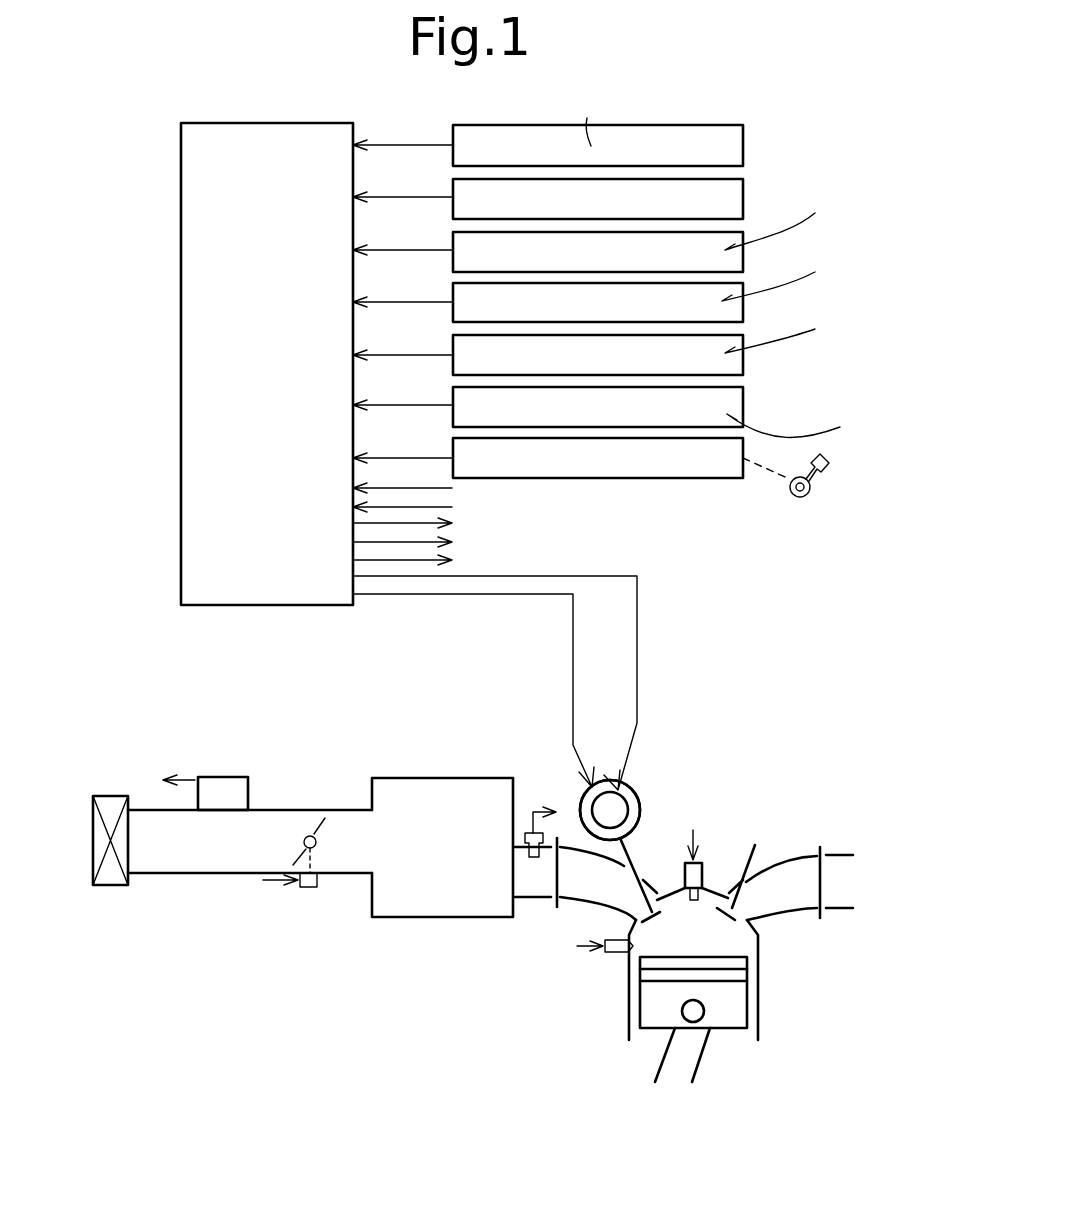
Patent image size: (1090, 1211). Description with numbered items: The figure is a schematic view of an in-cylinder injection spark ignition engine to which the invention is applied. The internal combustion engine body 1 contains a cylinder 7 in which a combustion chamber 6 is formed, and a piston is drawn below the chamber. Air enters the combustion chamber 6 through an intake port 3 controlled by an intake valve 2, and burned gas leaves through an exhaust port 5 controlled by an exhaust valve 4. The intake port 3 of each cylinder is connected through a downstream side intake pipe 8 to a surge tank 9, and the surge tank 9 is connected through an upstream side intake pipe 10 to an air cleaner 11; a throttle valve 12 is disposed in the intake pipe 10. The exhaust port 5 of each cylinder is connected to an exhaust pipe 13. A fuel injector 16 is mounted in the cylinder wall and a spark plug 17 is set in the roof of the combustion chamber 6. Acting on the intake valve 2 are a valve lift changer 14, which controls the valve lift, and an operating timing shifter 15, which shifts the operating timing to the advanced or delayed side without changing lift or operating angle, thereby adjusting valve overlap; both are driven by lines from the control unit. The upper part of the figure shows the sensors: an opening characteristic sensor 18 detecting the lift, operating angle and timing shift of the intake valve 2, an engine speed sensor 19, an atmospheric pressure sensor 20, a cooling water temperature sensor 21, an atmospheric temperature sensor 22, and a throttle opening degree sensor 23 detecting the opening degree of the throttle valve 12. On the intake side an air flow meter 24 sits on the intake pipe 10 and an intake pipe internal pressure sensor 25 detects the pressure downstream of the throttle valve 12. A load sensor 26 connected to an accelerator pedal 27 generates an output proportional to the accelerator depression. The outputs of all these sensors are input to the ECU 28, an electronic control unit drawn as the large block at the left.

The internal combustion engine body 1 is at (780, 1017).
The intake valve 2 is at (655, 895).
The intake port 3 is at (583, 899).
The exhaust valve 4 is at (748, 885).
The exhaust port 5 is at (798, 908).
The combustion chamber 6 is at (725, 942).
The cylinder 7 is at (628, 993).
The downstream side intake pipe 8 is at (527, 897).
The surge tank 9 is at (418, 778).
The upstream side intake pipe 10 is at (182, 873).
The air cleaner 11 is at (113, 885).
The throttle valve 12 is at (312, 836).
The exhaust pipe 13 is at (846, 853).
The valve lift changer 14 is at (584, 797).
The operating timing shifter 15 is at (636, 790).
The fuel injector 16 is at (613, 953).
The spark plug 17 is at (702, 876).
The opening characteristic sensor 18 is at (745, 149).
The engine speed sensor 19 is at (745, 200).
The atmospheric pressure sensor 20 is at (745, 250).
The cooling water temperature sensor 21 is at (745, 300).
The atmospheric temperature sensor 22 is at (745, 352).
The throttle opening degree sensor 23 is at (745, 408).
The air flow meter 24 is at (222, 777).
The intake pipe internal pressure sensor 25 is at (531, 833).
The load sensor 26 is at (700, 480).
The accelerator pedal 27 is at (808, 494).
The ECU 28 is at (181, 368).